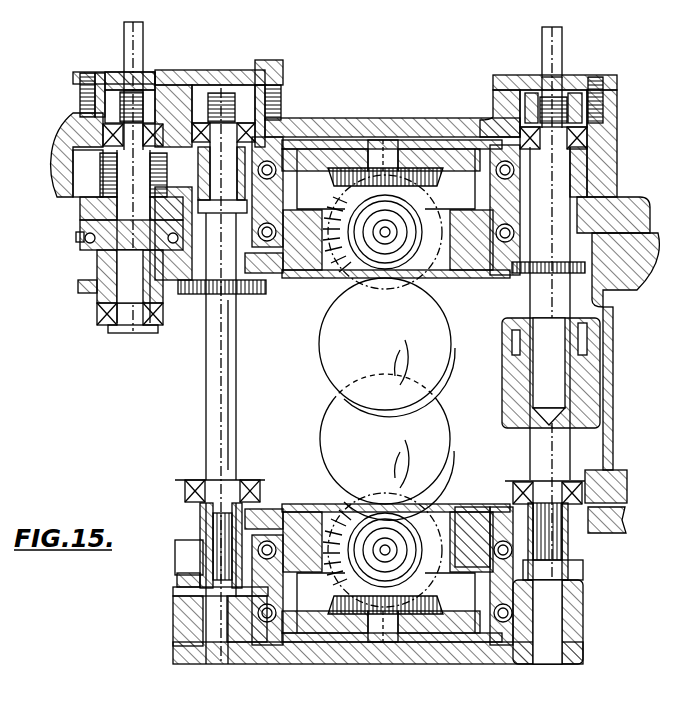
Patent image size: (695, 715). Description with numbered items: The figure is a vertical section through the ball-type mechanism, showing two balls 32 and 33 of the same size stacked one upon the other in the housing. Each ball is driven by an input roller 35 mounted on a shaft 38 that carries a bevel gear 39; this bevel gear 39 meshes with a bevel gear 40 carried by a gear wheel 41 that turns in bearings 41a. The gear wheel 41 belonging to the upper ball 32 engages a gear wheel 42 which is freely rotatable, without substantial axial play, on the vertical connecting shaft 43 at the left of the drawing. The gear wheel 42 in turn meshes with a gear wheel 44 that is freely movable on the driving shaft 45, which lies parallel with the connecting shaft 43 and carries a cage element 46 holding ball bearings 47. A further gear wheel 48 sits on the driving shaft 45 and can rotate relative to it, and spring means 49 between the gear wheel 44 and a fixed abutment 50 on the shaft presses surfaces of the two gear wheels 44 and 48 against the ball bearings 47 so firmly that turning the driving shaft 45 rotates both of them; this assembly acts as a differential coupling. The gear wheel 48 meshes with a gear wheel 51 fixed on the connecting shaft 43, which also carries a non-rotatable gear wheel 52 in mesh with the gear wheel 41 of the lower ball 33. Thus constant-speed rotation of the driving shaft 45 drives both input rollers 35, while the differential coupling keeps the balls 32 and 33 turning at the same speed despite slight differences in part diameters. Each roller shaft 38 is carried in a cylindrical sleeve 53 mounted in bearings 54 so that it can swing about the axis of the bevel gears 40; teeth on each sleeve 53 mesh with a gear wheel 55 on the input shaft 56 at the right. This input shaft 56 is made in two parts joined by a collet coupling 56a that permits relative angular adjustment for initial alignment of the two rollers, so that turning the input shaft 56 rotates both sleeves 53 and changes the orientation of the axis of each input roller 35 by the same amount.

The ball 32 is at (394, 343).
The ball 33 is at (394, 445).
The input roller 35 is at (425, 272).
The shaft 38 is at (372, 240).
The bevel gear 39 is at (355, 255).
The bevel gear 40 is at (413, 172).
The gear wheel 41 is at (347, 147).
The bearings 41a is at (508, 170).
The gear wheel 42 is at (188, 187).
The connecting shaft 43 is at (227, 160).
The gear wheel 44 is at (60, 197).
The driving shaft 45 is at (126, 32).
The cage element 46 is at (80, 238).
The ball bearings 47 is at (90, 250).
The gear wheel 48 is at (86, 292).
The spring means 49 is at (100, 172).
The fixed abutment 50 is at (100, 150).
The gear wheel 51 is at (190, 297).
The gear wheel 52 is at (175, 575).
The cylindrical sleeve 53 is at (476, 266).
The bearings 54 is at (508, 233).
The gear wheel 55 is at (588, 272).
The input shaft 56 is at (545, 40).
The collet coupling 56a is at (595, 362).